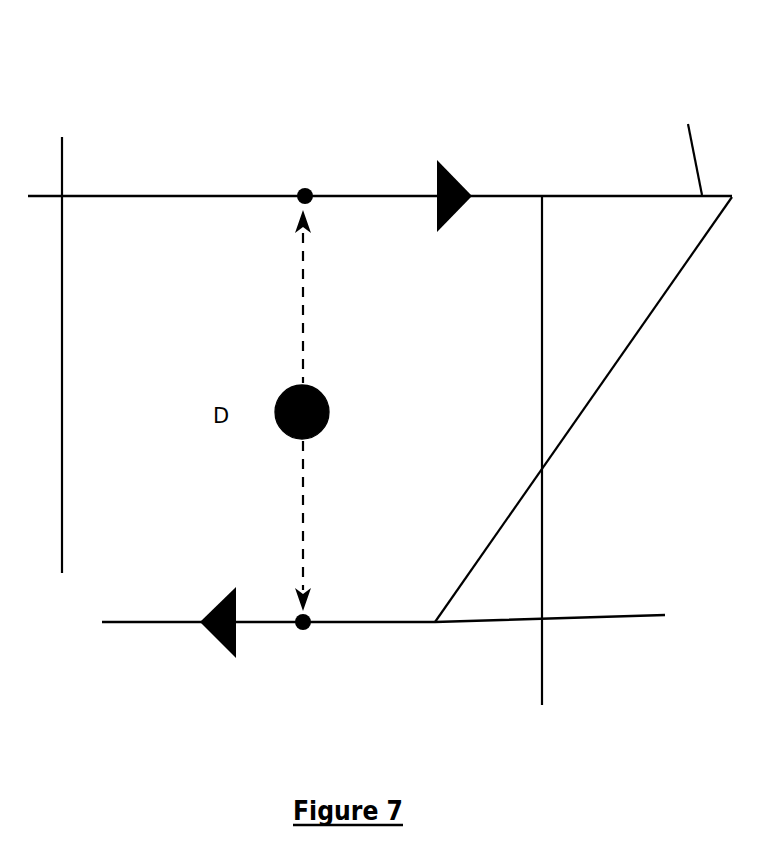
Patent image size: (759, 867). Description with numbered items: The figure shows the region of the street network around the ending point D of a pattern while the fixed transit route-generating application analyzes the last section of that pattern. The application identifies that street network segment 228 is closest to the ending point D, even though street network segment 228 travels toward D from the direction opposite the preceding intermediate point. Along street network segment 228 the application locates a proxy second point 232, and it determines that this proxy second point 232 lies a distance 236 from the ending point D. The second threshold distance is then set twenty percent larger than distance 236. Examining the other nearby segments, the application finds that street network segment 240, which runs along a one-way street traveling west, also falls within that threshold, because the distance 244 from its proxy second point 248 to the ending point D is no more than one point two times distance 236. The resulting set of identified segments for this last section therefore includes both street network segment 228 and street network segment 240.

The street network segment 228 is at (203, 165).
The proxy second point 232 is at (296, 181).
The distance 236 is at (332, 317).
The street network segment 240 is at (377, 640).
The distance 244 is at (332, 482).
The proxy second point 248 is at (296, 646).